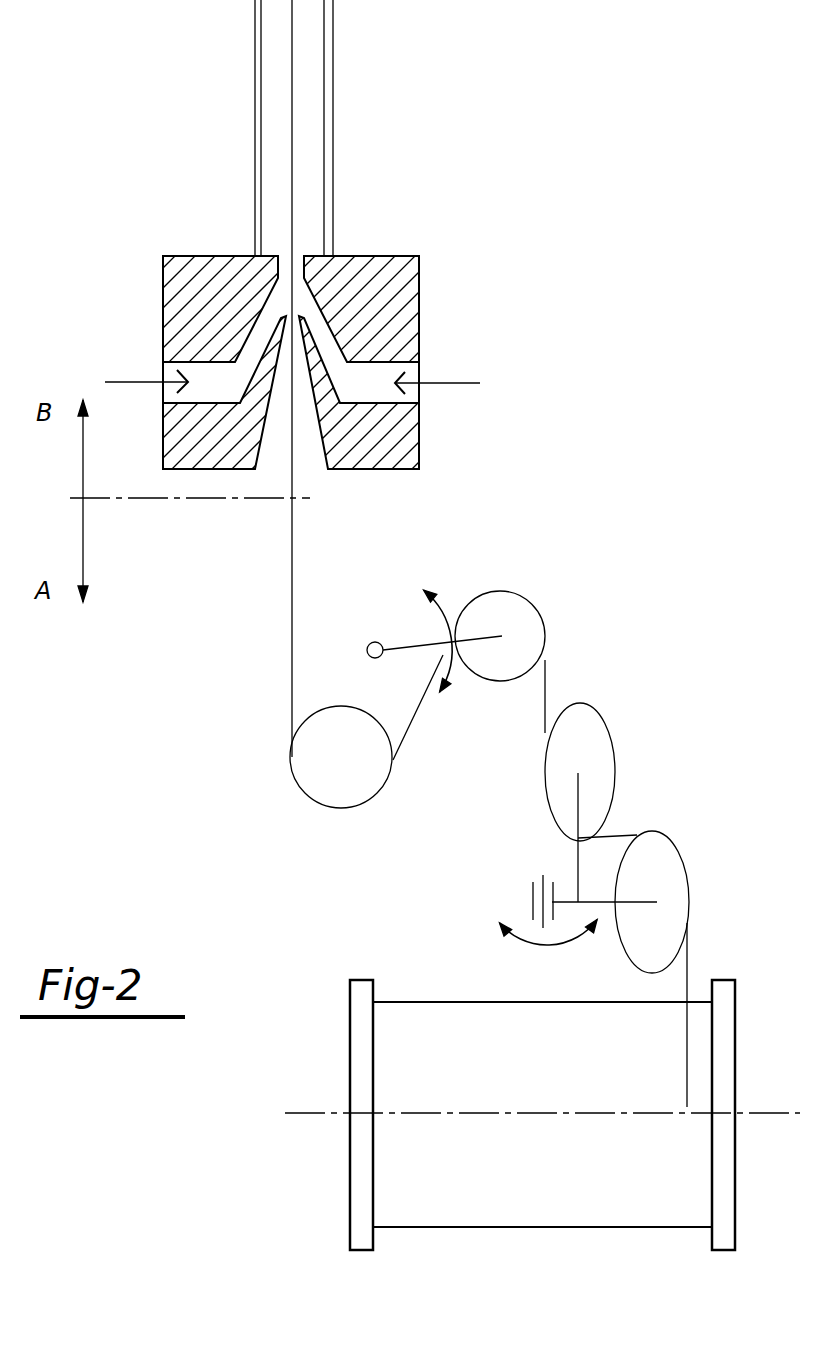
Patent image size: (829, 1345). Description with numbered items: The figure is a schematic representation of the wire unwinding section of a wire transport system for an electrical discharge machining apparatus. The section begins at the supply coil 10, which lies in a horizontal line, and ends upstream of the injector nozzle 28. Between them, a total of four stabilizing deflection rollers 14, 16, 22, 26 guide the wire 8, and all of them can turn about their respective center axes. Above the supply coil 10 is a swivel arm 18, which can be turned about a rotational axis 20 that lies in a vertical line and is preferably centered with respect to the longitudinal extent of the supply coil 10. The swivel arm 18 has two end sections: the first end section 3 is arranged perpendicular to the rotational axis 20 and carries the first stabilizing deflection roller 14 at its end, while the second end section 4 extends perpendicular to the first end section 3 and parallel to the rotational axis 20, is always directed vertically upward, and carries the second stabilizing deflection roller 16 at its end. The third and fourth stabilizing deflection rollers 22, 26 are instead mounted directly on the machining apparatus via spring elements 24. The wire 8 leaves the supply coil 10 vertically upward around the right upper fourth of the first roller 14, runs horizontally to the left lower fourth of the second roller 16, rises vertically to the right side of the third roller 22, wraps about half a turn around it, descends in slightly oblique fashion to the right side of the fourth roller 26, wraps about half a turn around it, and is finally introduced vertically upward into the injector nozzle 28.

The injector nozzle 28 is at (208, 264).
The wire 8 is at (292, 615).
The fourth stabilizing deflection roller 26 is at (313, 777).
The spring elements 24 is at (418, 643).
The third stabilizing deflection roller 22 is at (530, 628).
The second stabilizing deflection roller 16 is at (600, 752).
The first end section 3 is at (597, 900).
The second end section 4 is at (577, 862).
The swivel arm 18 is at (605, 903).
The first stabilizing deflection roller 14 is at (677, 892).
The rotational axis 20 is at (547, 923).
The supply coil 10 is at (477, 1198).